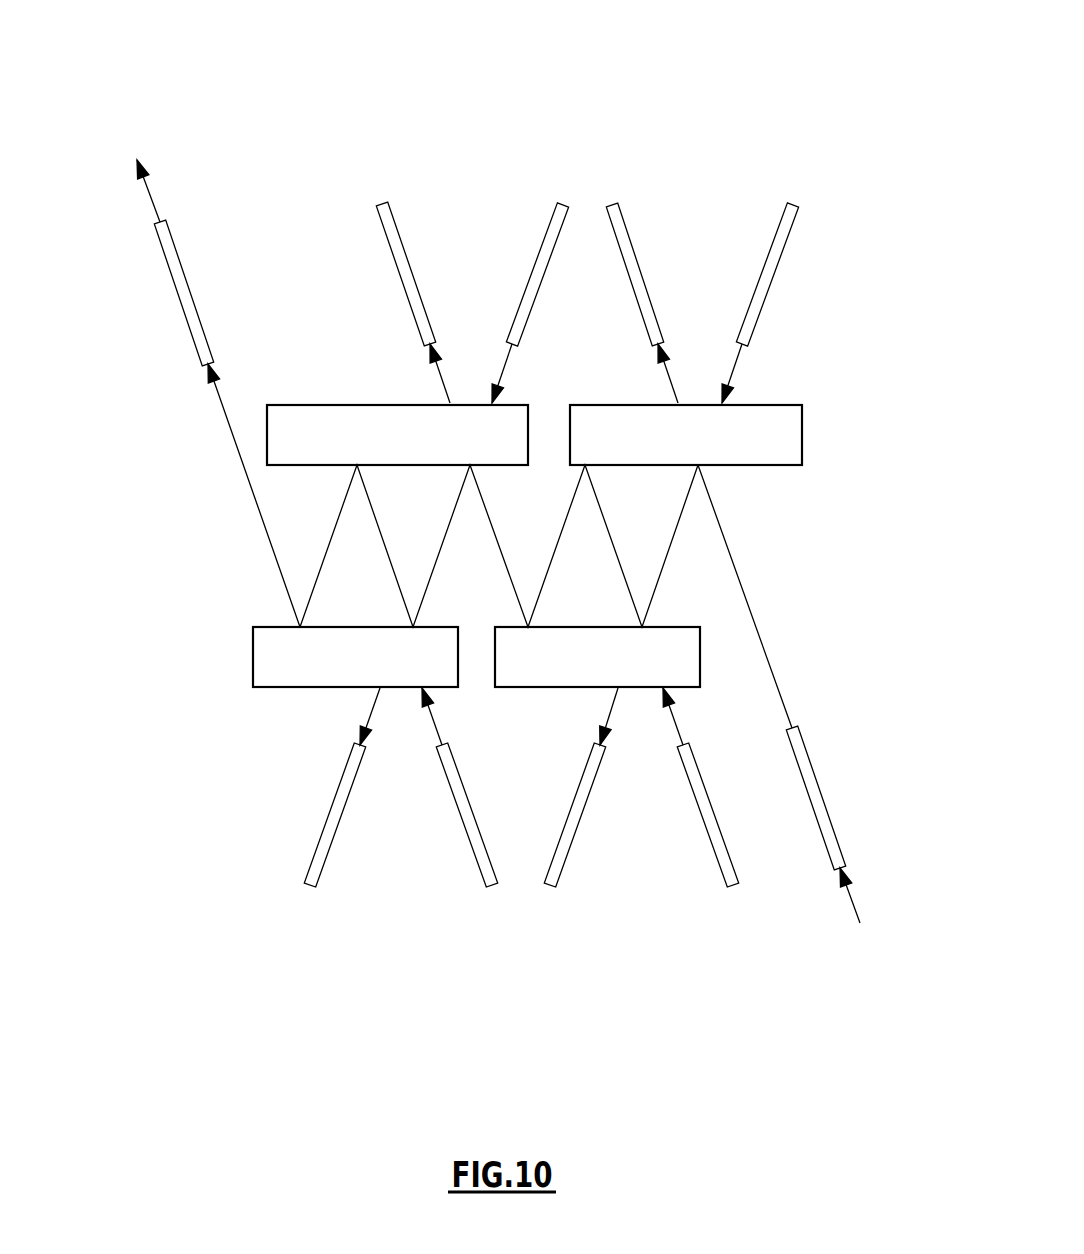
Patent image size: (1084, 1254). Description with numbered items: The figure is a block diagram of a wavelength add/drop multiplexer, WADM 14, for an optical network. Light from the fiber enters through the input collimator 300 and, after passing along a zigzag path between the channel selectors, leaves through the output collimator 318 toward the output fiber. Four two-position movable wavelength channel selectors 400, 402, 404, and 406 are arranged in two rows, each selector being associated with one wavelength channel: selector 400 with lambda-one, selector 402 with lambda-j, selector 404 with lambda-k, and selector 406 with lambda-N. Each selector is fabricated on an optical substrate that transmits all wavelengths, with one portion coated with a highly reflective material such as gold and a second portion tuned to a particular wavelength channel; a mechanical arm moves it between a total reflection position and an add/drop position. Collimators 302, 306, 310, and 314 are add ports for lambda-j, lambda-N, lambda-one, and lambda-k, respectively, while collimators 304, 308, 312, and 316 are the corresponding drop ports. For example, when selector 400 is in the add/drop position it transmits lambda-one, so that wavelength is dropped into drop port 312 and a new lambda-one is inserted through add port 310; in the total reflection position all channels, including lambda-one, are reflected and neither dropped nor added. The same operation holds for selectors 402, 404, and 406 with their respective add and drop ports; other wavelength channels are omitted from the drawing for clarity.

The WADM 14 is at (773, 62).
The input collimator 300 is at (825, 805).
The add port collimator 302 is at (722, 868).
The drop port collimator 304 is at (565, 860).
The add port collimator 306 is at (470, 853).
The drop port collimator 308 is at (312, 863).
The add port collimator 310 is at (785, 233).
The drop port collimator 312 is at (637, 268).
The add port collimator 314 is at (548, 232).
The drop port collimator 316 is at (393, 232).
The output collimator 318 is at (165, 232).
The movable wavelength channel selector 400 is at (803, 443).
The movable wavelength channel selector 402 is at (700, 676).
The movable wavelength channel selector 404 is at (322, 403).
The movable wavelength channel selector 406 is at (253, 655).